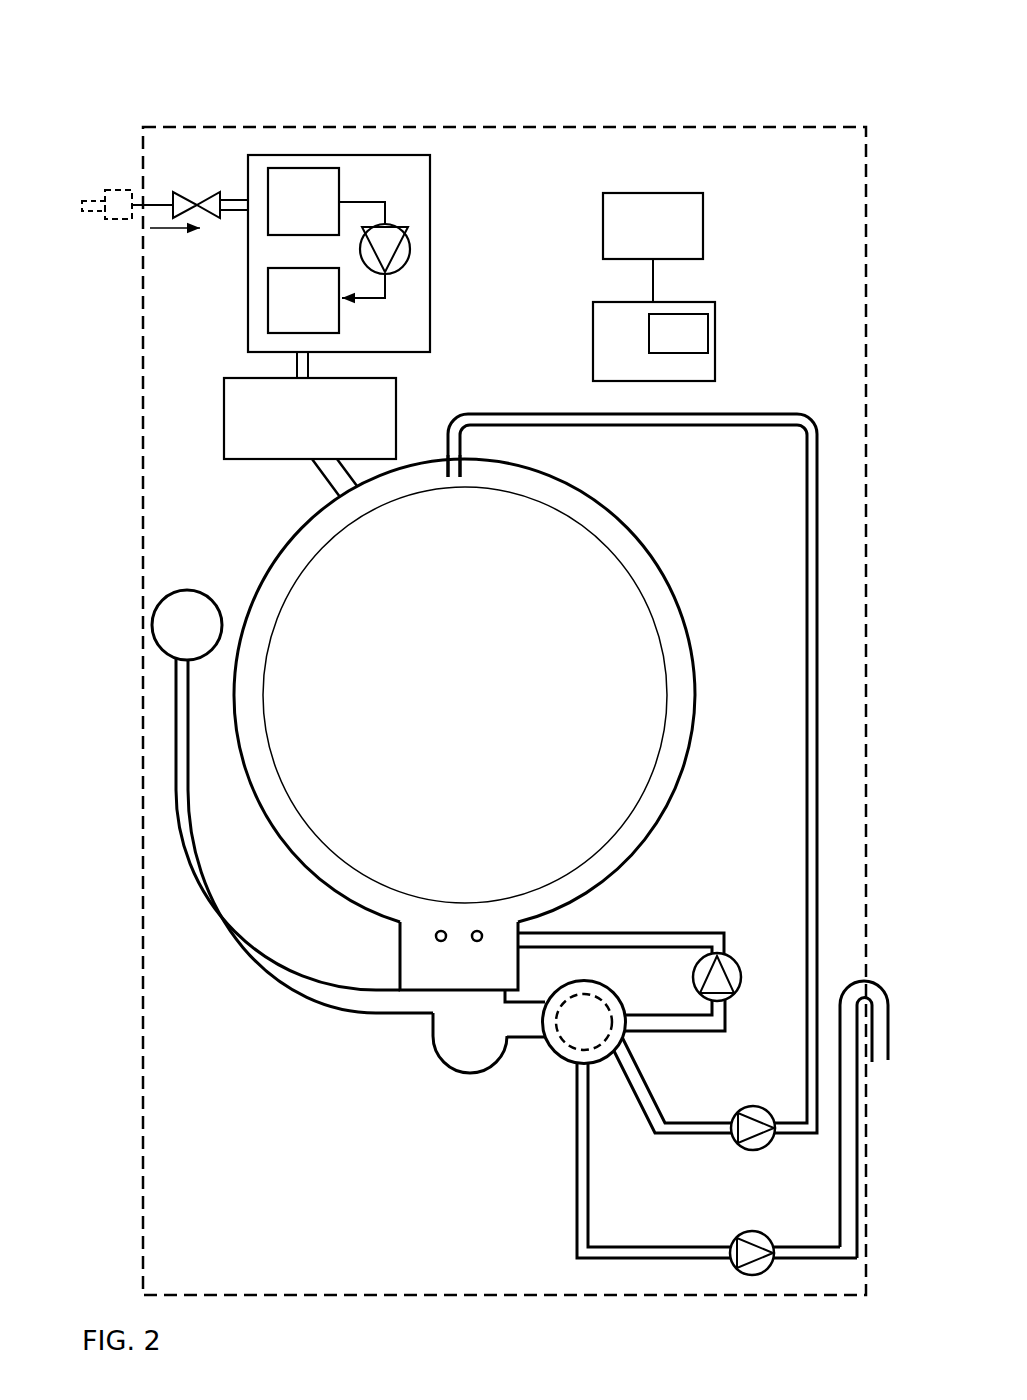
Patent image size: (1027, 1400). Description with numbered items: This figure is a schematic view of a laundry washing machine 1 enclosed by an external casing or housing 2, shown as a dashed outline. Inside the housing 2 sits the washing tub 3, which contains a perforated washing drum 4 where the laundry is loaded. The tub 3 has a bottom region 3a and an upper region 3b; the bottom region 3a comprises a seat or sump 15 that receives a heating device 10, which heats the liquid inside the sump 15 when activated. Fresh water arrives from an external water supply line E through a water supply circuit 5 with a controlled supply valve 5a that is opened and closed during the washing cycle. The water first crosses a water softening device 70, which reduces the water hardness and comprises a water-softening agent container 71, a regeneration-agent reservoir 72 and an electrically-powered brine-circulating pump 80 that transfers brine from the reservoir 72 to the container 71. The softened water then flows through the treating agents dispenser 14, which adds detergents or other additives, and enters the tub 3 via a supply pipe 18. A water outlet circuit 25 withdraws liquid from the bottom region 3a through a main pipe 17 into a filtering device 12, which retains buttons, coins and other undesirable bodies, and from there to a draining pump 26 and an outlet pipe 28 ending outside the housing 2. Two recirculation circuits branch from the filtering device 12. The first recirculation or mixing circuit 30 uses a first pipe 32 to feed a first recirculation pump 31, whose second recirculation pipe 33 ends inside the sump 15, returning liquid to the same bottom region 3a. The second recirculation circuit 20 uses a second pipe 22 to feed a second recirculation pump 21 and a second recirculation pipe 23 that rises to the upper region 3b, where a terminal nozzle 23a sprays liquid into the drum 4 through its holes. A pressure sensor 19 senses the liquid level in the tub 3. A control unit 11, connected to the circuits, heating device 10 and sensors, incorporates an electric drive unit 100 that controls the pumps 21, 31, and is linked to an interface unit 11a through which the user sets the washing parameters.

The laundry washing machine 1 is at (797, 97).
The housing 2 is at (647, 127).
The washing tub 3 is at (668, 575).
The bottom region of the tub 3a is at (607, 906).
The upper region of the tub 3b is at (614, 482).
The washing drum 4 is at (283, 612).
The water supply circuit 5 is at (131, 143).
The controlled supply valve 5a is at (181, 170).
The external water supply line E is at (88, 180).
The heating device 10 is at (425, 950).
The control unit 11 is at (614, 323).
The interface unit 11a is at (614, 221).
The filtering device 12 is at (555, 1057).
The treating agents dispenser 14 is at (252, 450).
The sump 15 is at (446, 970).
The main pipe 17 is at (473, 1048).
The supply pipe 18 is at (333, 470).
The pressure sensor 19 is at (150, 667).
The second recirculation circuit 20 is at (672, 1149).
The second recirculation pump 21 is at (772, 1154).
The second pipe 22 is at (692, 1127).
The second recirculation pipe 23 is at (811, 598).
The terminal nozzle 23a is at (470, 493).
The water outlet circuit 25 is at (702, 1280).
The draining pump 26 is at (771, 1279).
The outlet pipe 28 is at (848, 1156).
The mixing circuit 30 is at (735, 805).
The first recirculation pump 31 is at (742, 953).
The first pipe 32 is at (649, 1022).
The second recirculation pipe of the mixing circuit 33 is at (702, 938).
The water softening device 70 is at (443, 143).
The water-softening agent container 71 is at (282, 303).
The regeneration-agent reservoir 72 is at (308, 175).
The brine-circulating pump 80 is at (411, 216).
The electric drive unit 100 is at (709, 330).